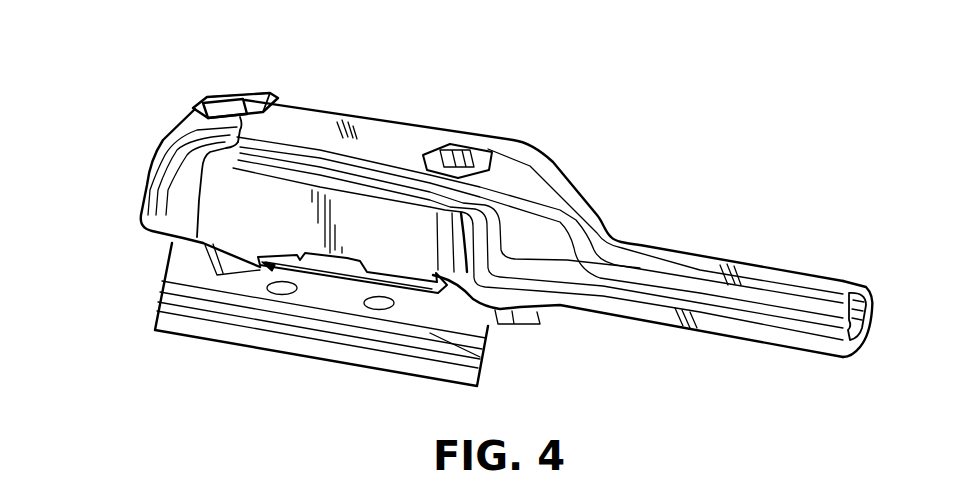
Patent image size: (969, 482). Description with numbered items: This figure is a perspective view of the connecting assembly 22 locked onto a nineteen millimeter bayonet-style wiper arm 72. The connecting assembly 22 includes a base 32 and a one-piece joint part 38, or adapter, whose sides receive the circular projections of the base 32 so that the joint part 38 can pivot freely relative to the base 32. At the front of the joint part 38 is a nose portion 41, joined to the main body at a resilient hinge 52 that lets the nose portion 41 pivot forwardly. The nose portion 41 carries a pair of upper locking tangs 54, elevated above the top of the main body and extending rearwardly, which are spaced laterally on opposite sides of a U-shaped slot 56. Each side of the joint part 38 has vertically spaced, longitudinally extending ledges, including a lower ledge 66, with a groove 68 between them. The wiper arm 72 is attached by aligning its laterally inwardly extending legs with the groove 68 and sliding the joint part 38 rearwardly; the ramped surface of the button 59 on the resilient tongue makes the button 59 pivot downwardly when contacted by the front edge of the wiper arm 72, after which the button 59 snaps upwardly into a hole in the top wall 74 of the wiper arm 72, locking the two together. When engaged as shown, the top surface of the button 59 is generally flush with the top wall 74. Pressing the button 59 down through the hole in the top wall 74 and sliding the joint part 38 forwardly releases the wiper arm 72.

The connecting assembly 22 is at (133, 120).
The base 32 is at (218, 323).
The joint part 38 is at (217, 88).
The nose portion 41 is at (153, 134).
The resilient hinge 52 is at (200, 244).
The upper locking tangs 54 is at (242, 110).
The U-shaped slot 56 is at (203, 100).
The button 59 is at (442, 153).
The lower ledge 66 is at (338, 278).
The groove 68 is at (325, 267).
The bayonet-style wiper arm 72 is at (315, 130).
The top wall 74 is at (375, 137).